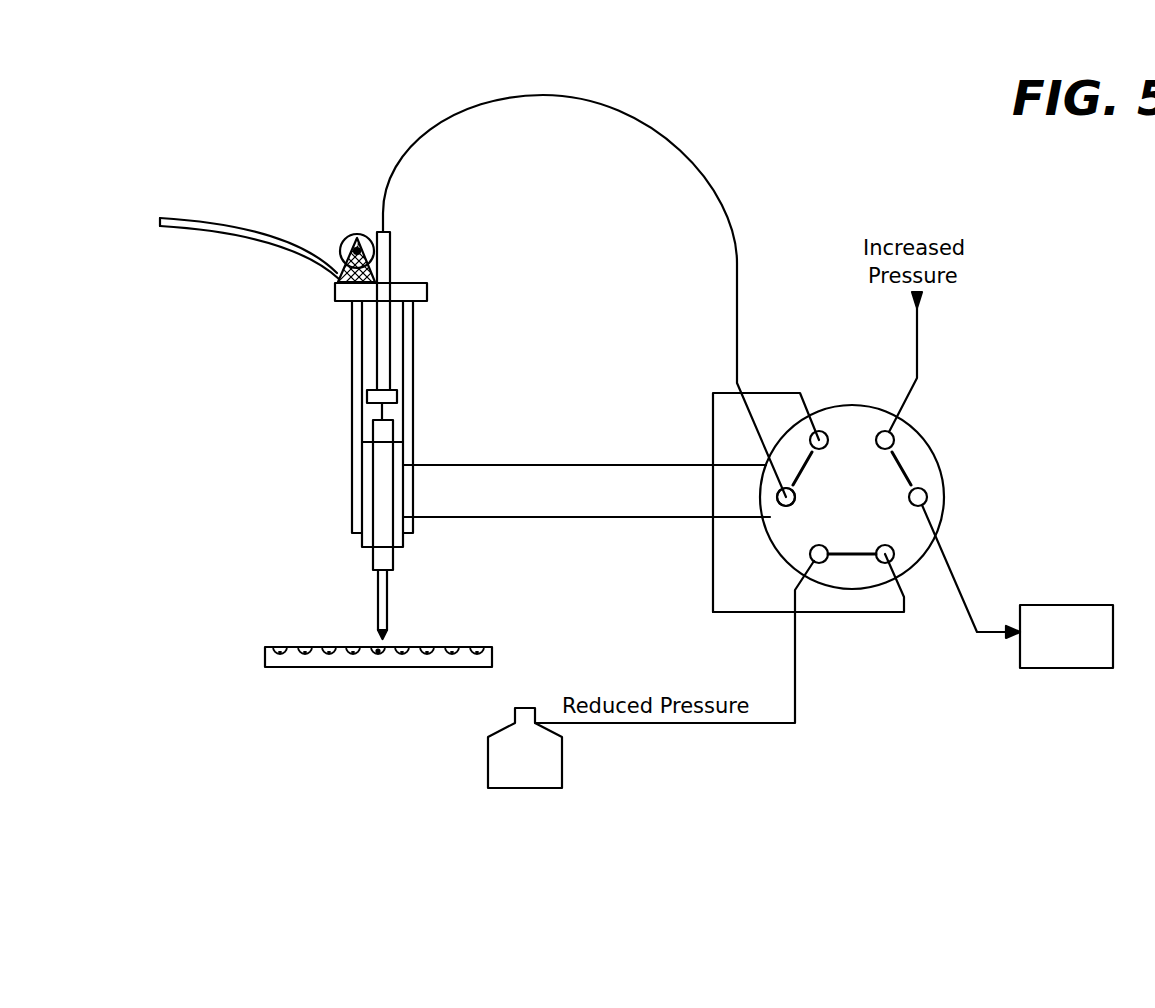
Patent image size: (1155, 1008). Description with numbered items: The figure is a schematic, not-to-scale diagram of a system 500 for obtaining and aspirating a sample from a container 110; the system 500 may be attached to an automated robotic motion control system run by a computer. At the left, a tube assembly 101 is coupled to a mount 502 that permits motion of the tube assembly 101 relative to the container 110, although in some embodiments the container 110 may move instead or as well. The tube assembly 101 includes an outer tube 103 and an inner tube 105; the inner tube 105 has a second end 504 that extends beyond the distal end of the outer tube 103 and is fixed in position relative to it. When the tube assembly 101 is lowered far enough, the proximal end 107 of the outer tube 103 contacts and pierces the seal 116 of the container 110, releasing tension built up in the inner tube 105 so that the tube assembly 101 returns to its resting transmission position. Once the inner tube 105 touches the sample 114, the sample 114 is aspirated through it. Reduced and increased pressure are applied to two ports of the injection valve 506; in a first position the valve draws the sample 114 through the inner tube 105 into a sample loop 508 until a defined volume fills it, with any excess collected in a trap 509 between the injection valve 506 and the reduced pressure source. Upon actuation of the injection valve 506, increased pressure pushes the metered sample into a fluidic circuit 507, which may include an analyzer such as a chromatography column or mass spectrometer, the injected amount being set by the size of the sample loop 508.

The tube assembly 101 is at (415, 580).
The outer tube 103 is at (377, 600).
The inner tube 105 is at (413, 138).
The proximal end 107 is at (388, 635).
The container 110 is at (287, 668).
The sample 114 is at (428, 655).
The seal 116 is at (377, 647).
The system 500 is at (289, 760).
The mount 502 is at (528, 488).
The second end 504 is at (784, 507).
The injection valve 506 is at (935, 453).
The fluidic circuit 507 is at (1047, 605).
The sample loop 508 is at (845, 614).
The trap 509 is at (562, 770).